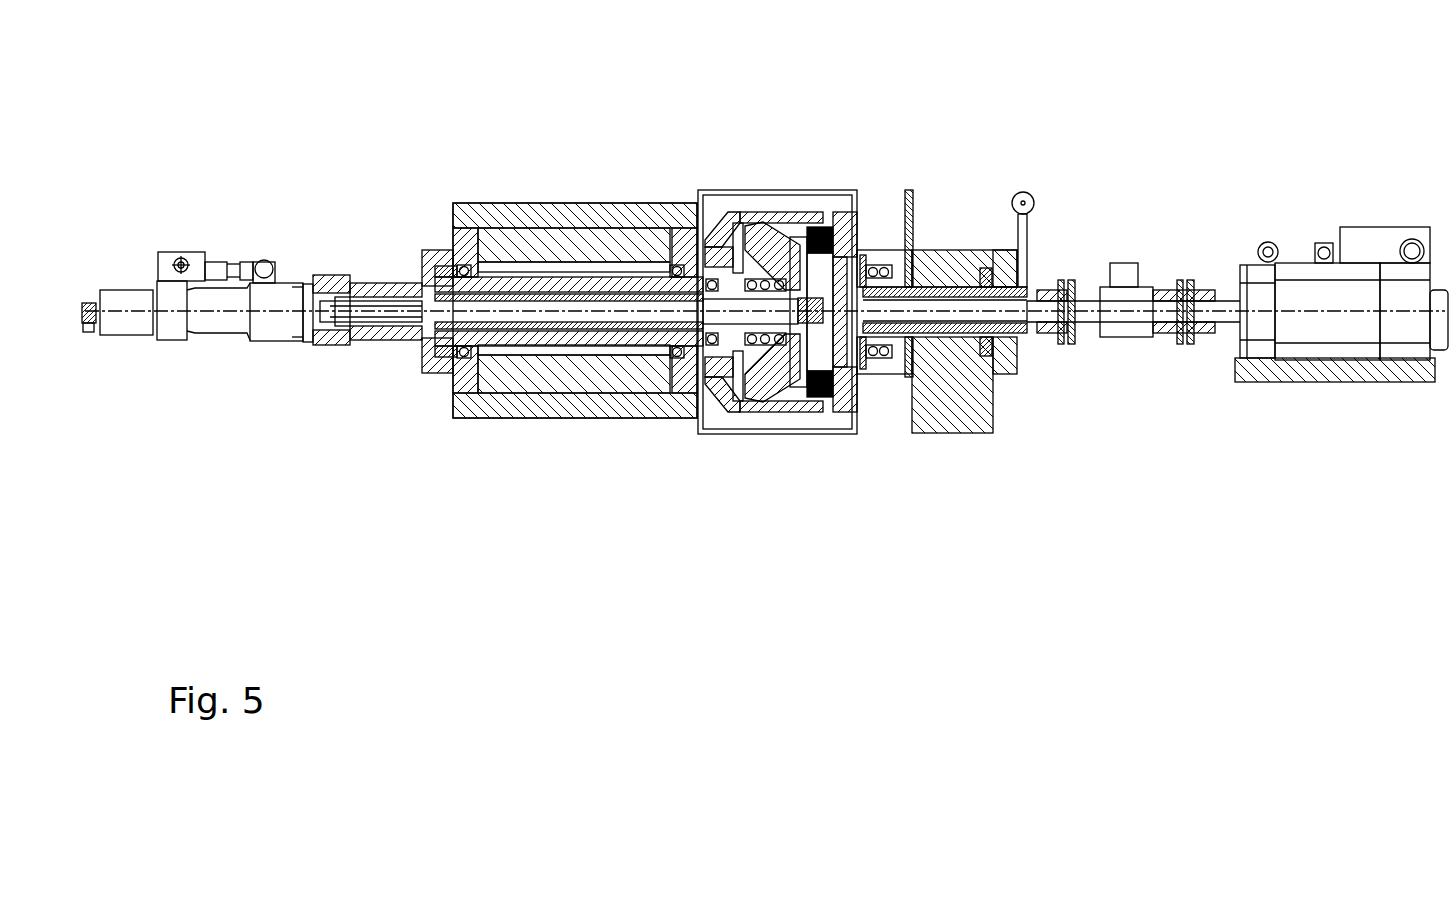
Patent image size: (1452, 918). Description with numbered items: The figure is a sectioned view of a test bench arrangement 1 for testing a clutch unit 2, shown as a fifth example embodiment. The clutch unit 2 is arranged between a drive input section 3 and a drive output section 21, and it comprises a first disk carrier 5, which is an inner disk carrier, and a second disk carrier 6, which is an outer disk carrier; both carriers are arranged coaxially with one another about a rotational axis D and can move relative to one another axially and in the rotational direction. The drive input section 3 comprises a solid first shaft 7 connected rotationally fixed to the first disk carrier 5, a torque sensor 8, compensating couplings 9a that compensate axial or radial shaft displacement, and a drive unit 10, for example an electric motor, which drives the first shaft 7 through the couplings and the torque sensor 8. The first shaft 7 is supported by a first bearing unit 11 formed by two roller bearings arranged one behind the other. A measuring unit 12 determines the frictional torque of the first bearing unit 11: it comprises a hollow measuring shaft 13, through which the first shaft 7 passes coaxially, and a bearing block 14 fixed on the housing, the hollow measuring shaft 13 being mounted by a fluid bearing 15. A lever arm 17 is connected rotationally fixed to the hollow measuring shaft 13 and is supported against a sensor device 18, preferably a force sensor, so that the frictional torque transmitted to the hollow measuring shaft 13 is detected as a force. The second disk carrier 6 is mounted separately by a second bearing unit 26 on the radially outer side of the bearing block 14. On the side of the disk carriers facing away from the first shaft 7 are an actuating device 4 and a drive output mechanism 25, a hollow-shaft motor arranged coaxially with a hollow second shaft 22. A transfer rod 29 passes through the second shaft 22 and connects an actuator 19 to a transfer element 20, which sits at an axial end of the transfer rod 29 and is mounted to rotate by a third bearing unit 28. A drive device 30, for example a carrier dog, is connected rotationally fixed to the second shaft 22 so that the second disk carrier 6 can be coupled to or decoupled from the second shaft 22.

The test bench arrangement 1 is at (1152, 108).
The clutch unit 2 is at (864, 545).
The drive input section 3 is at (1450, 390).
The actuating device 4 is at (82, 335).
The first disk carrier 5 is at (812, 262).
The second disk carrier 6 is at (829, 268).
The first shaft 7 is at (1027, 320).
The torque sensor 8 is at (1130, 275).
The first compensating coupling 9a is at (1070, 344).
The drive unit 10 is at (1310, 295).
The first bearing unit 11 is at (1003, 357).
The measuring unit 12 is at (982, 289).
The hollow measuring shaft 13 is at (915, 285).
The bearing block 14 is at (975, 262).
The fluid bearing 15 is at (940, 285).
The lever arm 17 is at (1030, 246).
The sensor device 18 is at (1034, 199).
The actuator 19 is at (218, 326).
The transfer element 20 is at (795, 318).
The drive output section 21 is at (623, 221).
The second shaft 22 is at (569, 240).
The drive output mechanism 25 is at (597, 240).
The second bearing unit 26 is at (461, 266).
The third bearing unit 28 is at (760, 352).
The transfer rod 29 is at (400, 326).
The drive device 30 is at (773, 215).
The rotational axis D is at (137, 309).